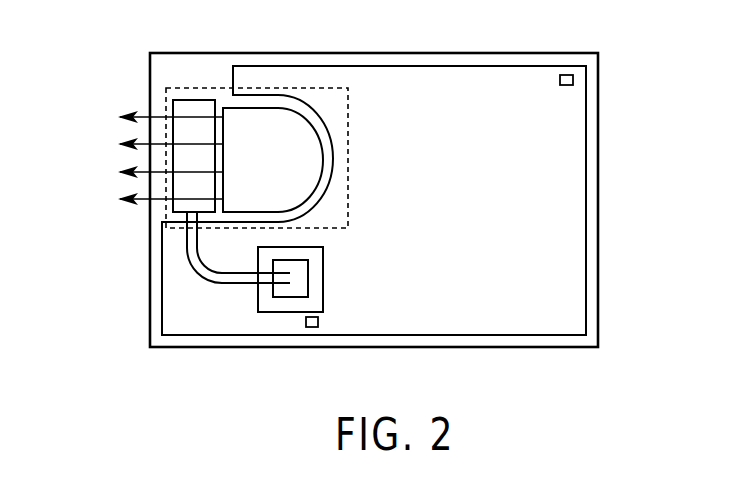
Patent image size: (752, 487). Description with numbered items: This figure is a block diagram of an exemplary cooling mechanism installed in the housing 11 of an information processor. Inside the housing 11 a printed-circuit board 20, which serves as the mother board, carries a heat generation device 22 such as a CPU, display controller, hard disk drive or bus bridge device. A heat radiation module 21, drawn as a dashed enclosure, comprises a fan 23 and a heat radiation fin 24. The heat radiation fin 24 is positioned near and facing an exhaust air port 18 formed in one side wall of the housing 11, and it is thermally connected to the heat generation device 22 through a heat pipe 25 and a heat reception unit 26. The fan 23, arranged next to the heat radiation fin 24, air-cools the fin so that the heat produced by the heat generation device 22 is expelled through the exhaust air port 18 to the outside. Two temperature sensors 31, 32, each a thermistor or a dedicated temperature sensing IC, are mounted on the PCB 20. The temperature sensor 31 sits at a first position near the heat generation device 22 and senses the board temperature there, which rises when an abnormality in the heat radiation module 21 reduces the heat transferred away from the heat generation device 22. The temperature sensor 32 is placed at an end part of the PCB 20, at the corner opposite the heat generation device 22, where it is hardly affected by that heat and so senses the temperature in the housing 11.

The housing 11 is at (597, 305).
The exhaust air port 18 is at (130, 183).
The printed-circuit board 20 is at (577, 190).
The heat radiation module 21 is at (350, 122).
The heat generation device 22 is at (325, 280).
The fan 23 is at (303, 177).
The heat radiation fin 24 is at (194, 108).
The heat pipe 25 is at (212, 277).
The heat reception unit 26 is at (297, 268).
The temperature sensor 31 is at (312, 327).
The temperature sensor 32 is at (566, 73).